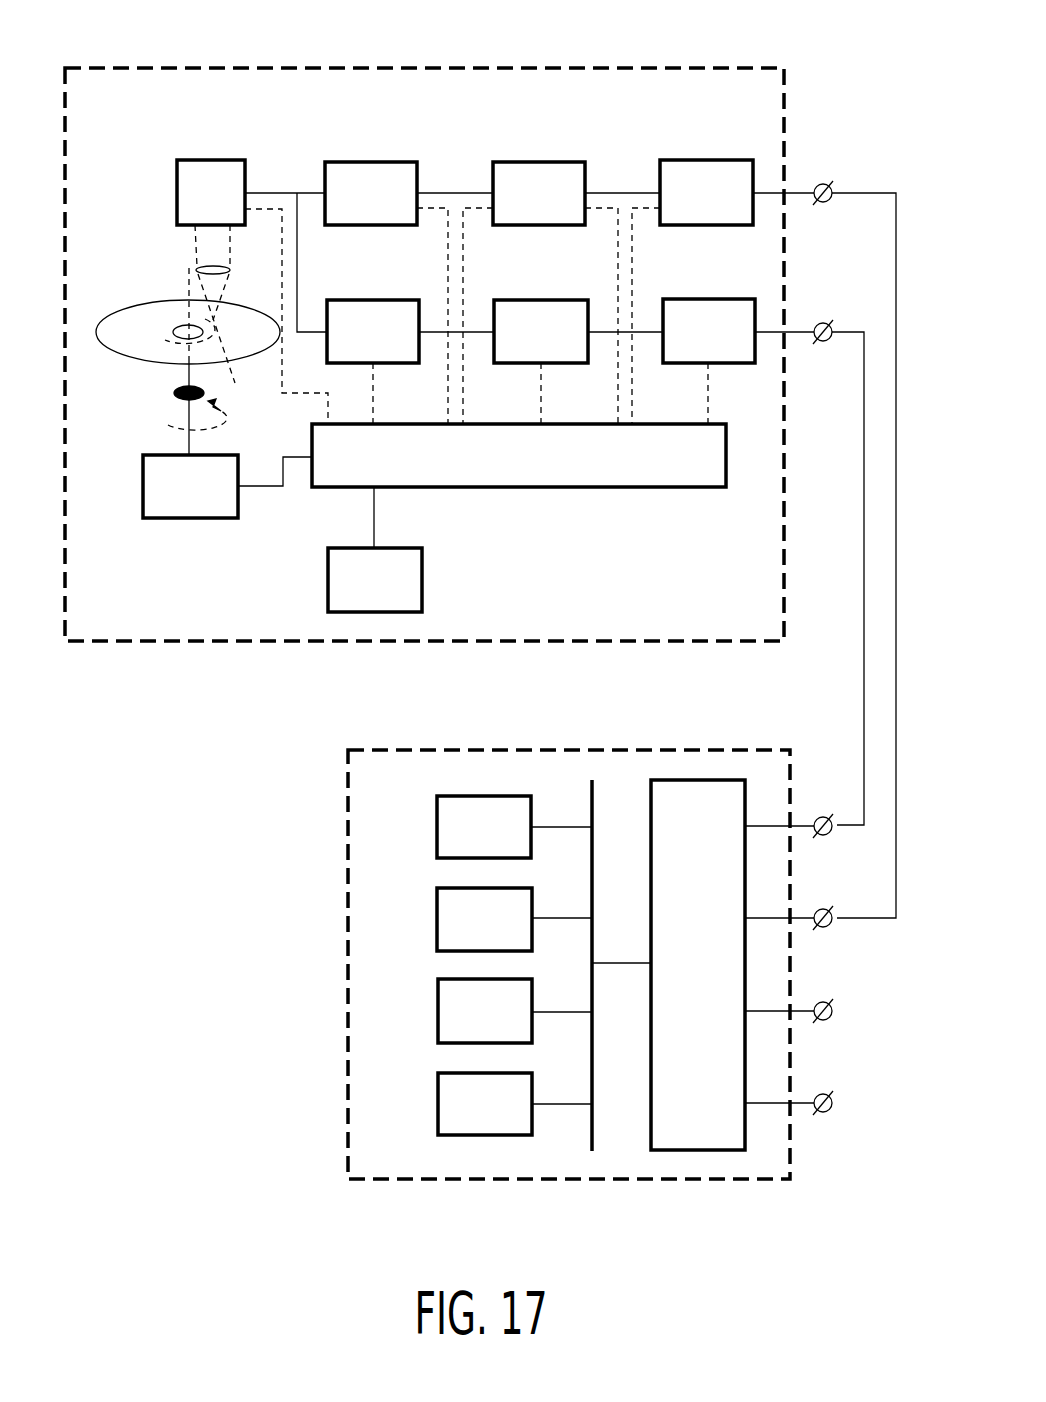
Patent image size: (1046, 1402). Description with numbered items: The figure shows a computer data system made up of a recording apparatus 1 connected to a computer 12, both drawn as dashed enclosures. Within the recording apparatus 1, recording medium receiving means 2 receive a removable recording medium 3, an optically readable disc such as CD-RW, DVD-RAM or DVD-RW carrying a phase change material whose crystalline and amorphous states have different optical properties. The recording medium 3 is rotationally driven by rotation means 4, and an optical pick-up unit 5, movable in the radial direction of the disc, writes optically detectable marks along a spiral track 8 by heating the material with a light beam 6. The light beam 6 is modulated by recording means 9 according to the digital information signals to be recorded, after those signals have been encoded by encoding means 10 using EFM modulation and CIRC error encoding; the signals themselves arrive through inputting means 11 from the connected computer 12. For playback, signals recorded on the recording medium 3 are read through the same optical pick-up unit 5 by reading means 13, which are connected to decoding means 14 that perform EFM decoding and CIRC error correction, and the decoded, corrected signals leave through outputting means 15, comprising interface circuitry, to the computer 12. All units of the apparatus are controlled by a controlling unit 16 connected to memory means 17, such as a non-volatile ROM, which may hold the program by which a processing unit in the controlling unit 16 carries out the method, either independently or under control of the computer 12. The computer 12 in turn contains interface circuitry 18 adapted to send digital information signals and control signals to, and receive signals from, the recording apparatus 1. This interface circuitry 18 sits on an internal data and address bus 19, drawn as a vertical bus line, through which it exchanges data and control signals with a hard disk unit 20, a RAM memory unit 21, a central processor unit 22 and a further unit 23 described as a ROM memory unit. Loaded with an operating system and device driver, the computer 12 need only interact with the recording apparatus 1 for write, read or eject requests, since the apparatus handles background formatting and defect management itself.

The recording apparatus 1 is at (628, 66).
The recording medium receiving means 2 is at (175, 393).
The recording medium 3 is at (110, 313).
The rotation means 4 is at (197, 520).
The optical pick-up unit 5 is at (224, 160).
The light beam 6 is at (208, 292).
The spiral track 8 is at (208, 340).
The recording means 9 is at (372, 160).
The encoding means 10 is at (547, 160).
The inputting means 11 is at (704, 160).
The computer 12 is at (348, 878).
The reading means 13 is at (373, 300).
The decoding means 14 is at (547, 300).
The outputting means 15 is at (707, 299).
The controlling unit 16 is at (545, 490).
The memory means 17 is at (422, 587).
The interface circuitry 18 is at (651, 1128).
The internal data and address bus 19 is at (590, 781).
The hard disk unit 20 is at (437, 828).
The RAM memory unit 21 is at (437, 919).
The central processor unit 22 is at (438, 1012).
The input/output device 23 is at (438, 1103).